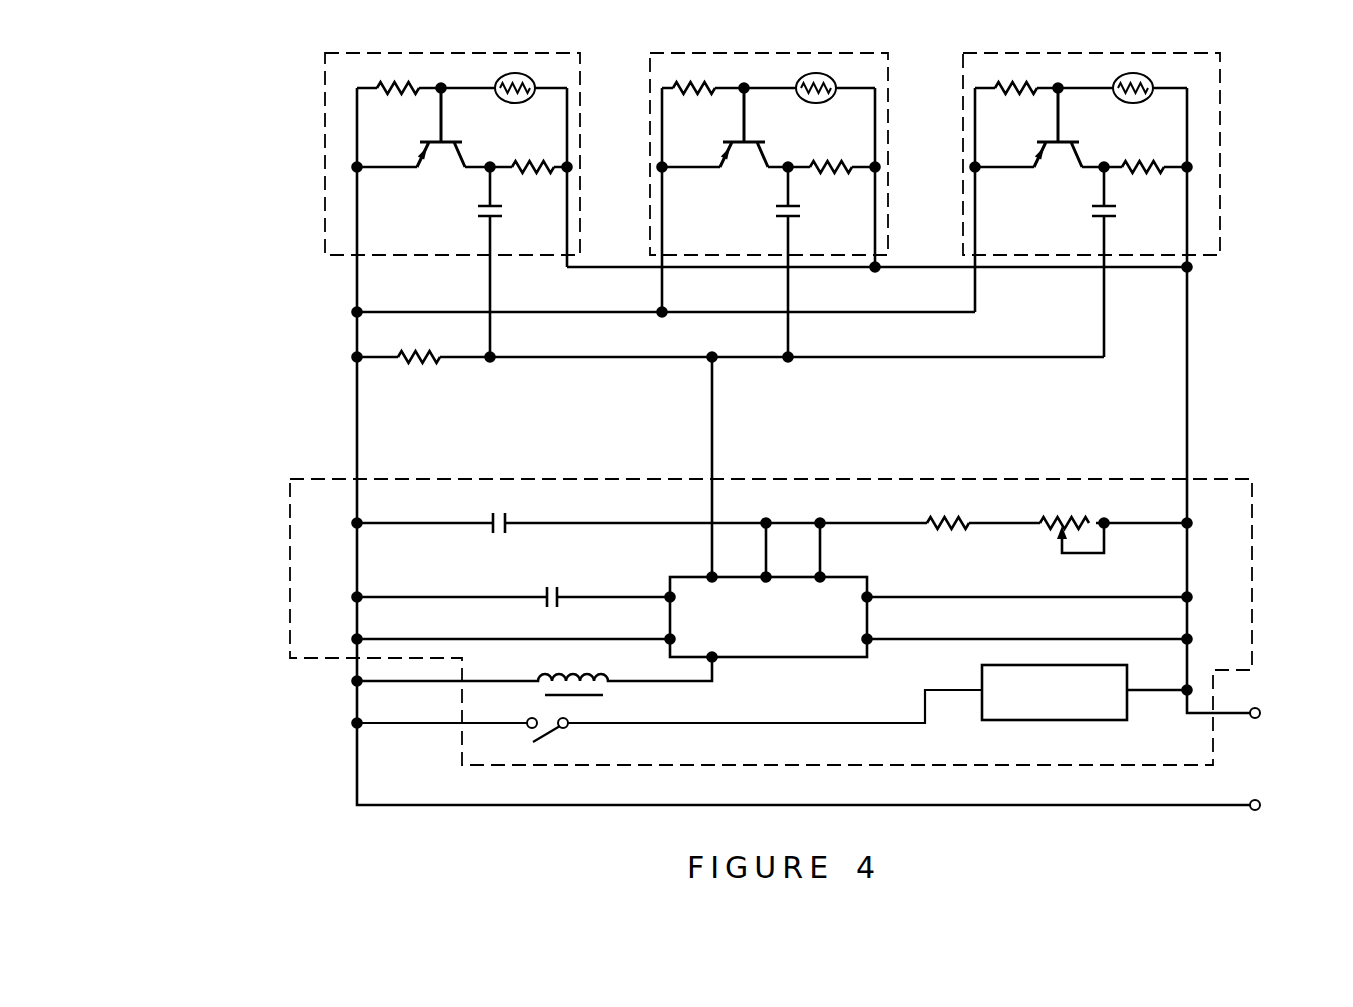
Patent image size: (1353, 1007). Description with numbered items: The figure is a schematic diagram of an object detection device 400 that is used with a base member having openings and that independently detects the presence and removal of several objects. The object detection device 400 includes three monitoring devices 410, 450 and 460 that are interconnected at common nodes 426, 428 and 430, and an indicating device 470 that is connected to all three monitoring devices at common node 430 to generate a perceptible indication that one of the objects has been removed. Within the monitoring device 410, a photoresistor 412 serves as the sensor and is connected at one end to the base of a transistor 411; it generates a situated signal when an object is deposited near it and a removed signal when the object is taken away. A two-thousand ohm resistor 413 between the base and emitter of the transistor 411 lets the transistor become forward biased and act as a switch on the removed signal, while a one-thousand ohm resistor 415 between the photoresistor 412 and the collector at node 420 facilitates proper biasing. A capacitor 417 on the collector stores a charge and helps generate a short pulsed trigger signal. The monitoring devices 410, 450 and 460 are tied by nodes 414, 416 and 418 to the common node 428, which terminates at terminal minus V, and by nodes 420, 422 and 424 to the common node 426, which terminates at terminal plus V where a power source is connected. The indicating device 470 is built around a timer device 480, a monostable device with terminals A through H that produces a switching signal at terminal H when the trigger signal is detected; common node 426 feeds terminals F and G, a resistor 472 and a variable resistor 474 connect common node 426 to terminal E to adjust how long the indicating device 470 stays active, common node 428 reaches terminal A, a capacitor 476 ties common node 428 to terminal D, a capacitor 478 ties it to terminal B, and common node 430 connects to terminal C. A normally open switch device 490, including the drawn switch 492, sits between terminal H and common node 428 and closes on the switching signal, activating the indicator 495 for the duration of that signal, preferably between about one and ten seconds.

The object detection device 400 is at (272, 471).
The monitoring device 410 is at (316, 70).
The transistor 411 is at (420, 141).
The photoresistor 412 is at (516, 72).
The resistor 413 is at (396, 82).
The node 414 is at (357, 205).
The resistor 415 is at (549, 160).
The node 416 is at (660, 248).
The capacitor 417 is at (488, 213).
The node 418 is at (972, 258).
The node 420 is at (569, 197).
The node 422 is at (878, 185).
The node 424 is at (1188, 200).
The common node 426 is at (1150, 268).
The common node 428 is at (383, 311).
The common node 430 is at (515, 360).
The monitoring device 450 is at (812, 53).
The monitoring device 460 is at (1222, 92).
The indicating device 470 is at (1240, 478).
The resistor 472 is at (926, 520).
The variable resistor 474 is at (1047, 520).
The capacitor 476 is at (505, 520).
The capacitor 478 is at (560, 594).
The timer device 480 is at (395, 356).
The switch device 490 is at (412, 704).
The switch 492 is at (546, 736).
The indicator 495 is at (1073, 722).